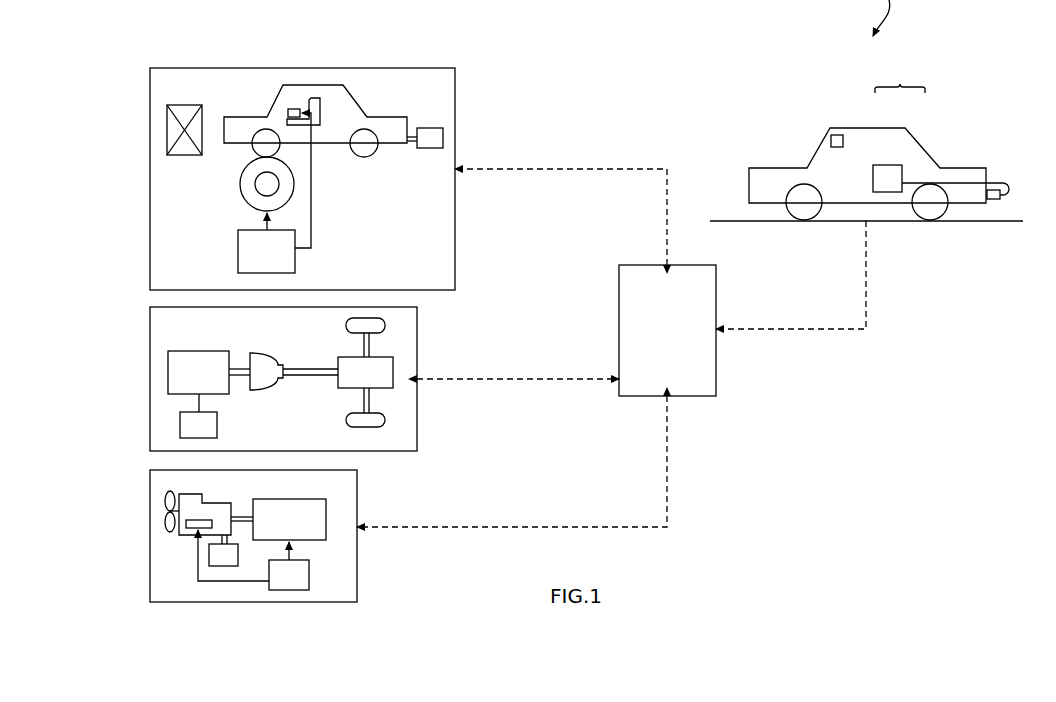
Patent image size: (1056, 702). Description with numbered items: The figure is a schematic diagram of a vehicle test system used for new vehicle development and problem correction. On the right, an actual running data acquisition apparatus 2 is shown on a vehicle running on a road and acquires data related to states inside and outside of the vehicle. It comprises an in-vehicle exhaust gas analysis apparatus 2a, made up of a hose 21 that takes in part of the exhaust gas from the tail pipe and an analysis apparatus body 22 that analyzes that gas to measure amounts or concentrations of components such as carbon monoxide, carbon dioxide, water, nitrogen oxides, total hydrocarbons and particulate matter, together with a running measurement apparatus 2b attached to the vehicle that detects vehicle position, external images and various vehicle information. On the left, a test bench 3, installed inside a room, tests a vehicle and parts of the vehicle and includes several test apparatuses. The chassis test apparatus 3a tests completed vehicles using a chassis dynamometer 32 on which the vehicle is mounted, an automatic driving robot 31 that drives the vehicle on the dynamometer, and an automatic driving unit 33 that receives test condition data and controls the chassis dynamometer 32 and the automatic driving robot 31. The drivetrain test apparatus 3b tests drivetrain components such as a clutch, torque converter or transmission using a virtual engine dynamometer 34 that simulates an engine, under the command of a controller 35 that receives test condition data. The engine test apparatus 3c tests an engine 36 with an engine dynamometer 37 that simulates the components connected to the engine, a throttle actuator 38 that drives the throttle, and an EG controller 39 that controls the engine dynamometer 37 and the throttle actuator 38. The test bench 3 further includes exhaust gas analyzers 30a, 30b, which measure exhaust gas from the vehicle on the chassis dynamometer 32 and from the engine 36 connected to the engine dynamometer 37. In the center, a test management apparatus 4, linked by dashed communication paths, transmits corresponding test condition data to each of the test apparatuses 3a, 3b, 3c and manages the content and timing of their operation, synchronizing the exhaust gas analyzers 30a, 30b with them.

The actual running data acquisition apparatus 2 is at (960, 112).
The in-vehicle exhaust gas analysis apparatus 2a is at (900, 79).
The running measurement apparatus 2b is at (836, 135).
The hose 21 is at (940, 183).
The analysis apparatus body 22 is at (888, 165).
The test bench 3 is at (203, 55).
The chassis test apparatus 3a is at (484, 100).
The drivetrain test apparatus 3b is at (438, 348).
The engine test apparatus 3c is at (373, 505).
The exhaust gas analyzer 30a is at (432, 148).
The exhaust gas analyzer 30b is at (238, 557).
The automatic driving robot 31 is at (288, 113).
The chassis dynamometer 32 is at (240, 184).
The automatic driving unit 33 is at (238, 252).
The virtual engine dynamometer 34 is at (233, 357).
The controller 35 is at (217, 425).
The engine 36 is at (232, 504).
The engine dynamometer 37 is at (289, 499).
The throttle actuator 38 is at (190, 530).
The EG controller 39 is at (309, 573).
The test management apparatus 4 is at (740, 292).